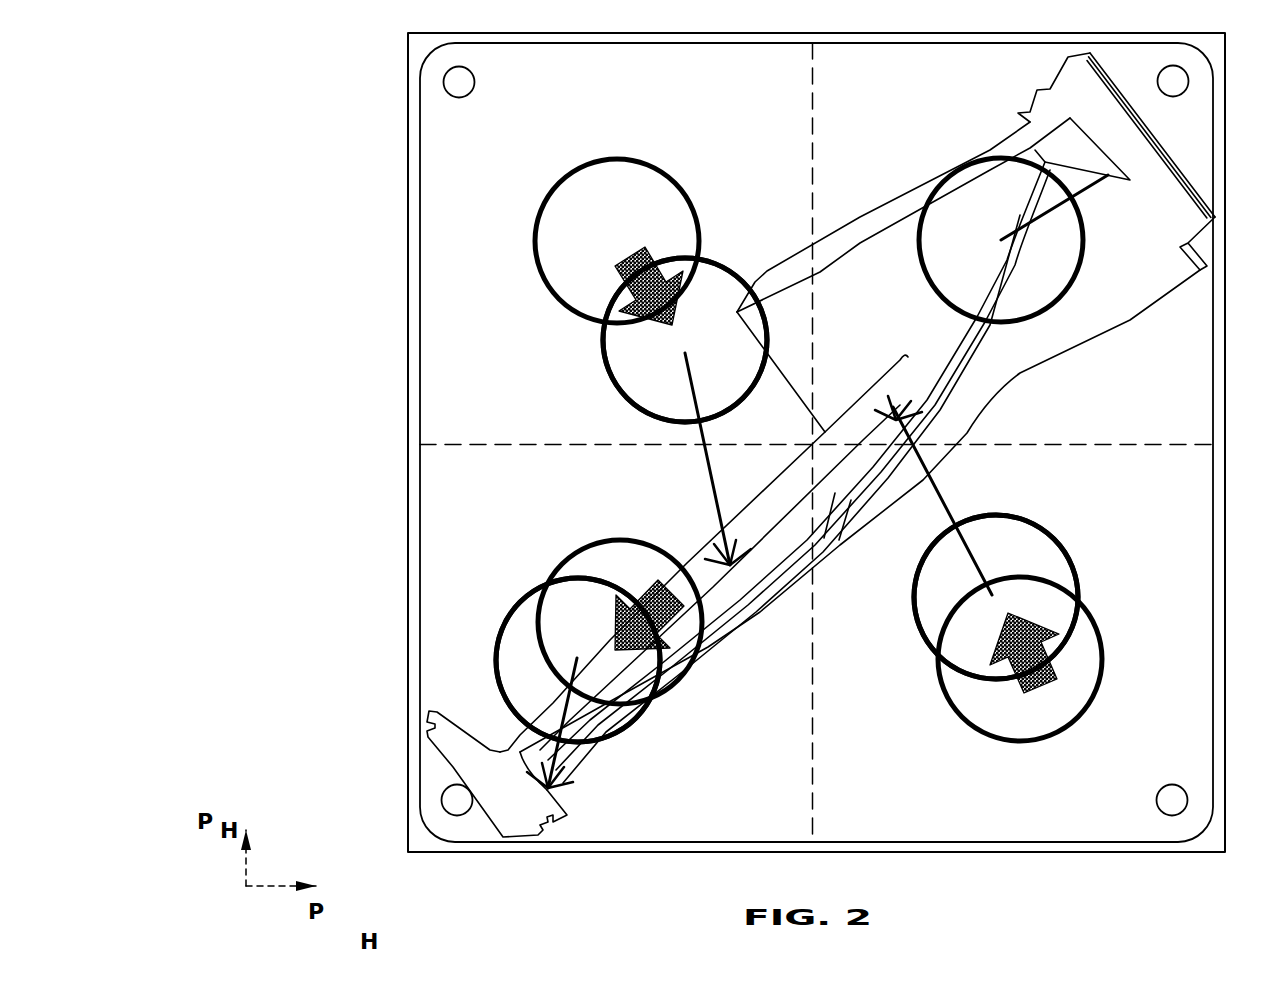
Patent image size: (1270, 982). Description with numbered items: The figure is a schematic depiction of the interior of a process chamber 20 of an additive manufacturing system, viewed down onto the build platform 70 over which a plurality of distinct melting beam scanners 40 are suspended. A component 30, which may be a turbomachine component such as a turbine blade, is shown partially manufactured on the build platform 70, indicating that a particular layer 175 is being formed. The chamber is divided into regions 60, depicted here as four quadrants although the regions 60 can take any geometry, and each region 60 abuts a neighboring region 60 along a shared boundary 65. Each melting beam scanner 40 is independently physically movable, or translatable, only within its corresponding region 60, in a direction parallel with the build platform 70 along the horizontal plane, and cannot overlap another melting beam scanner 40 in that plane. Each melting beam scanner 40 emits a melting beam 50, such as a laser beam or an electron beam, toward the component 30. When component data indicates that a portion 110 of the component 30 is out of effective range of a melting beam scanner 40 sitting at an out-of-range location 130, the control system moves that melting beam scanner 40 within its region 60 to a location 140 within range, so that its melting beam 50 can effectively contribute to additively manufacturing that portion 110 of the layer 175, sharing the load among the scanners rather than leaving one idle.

The process chamber 20 is at (278, 108).
The component 30 is at (833, 346).
The melting beam scanner 40 is at (607, 377).
The melting beam 50 is at (722, 470).
The region 60 is at (447, 242).
The boundary 65 is at (812, 113).
The build platform 70 is at (619, 113).
The portion of component 110 is at (975, 433).
The out-of-range location 130 is at (547, 185).
The location within range 140 is at (725, 267).
The layer 175 is at (708, 647).